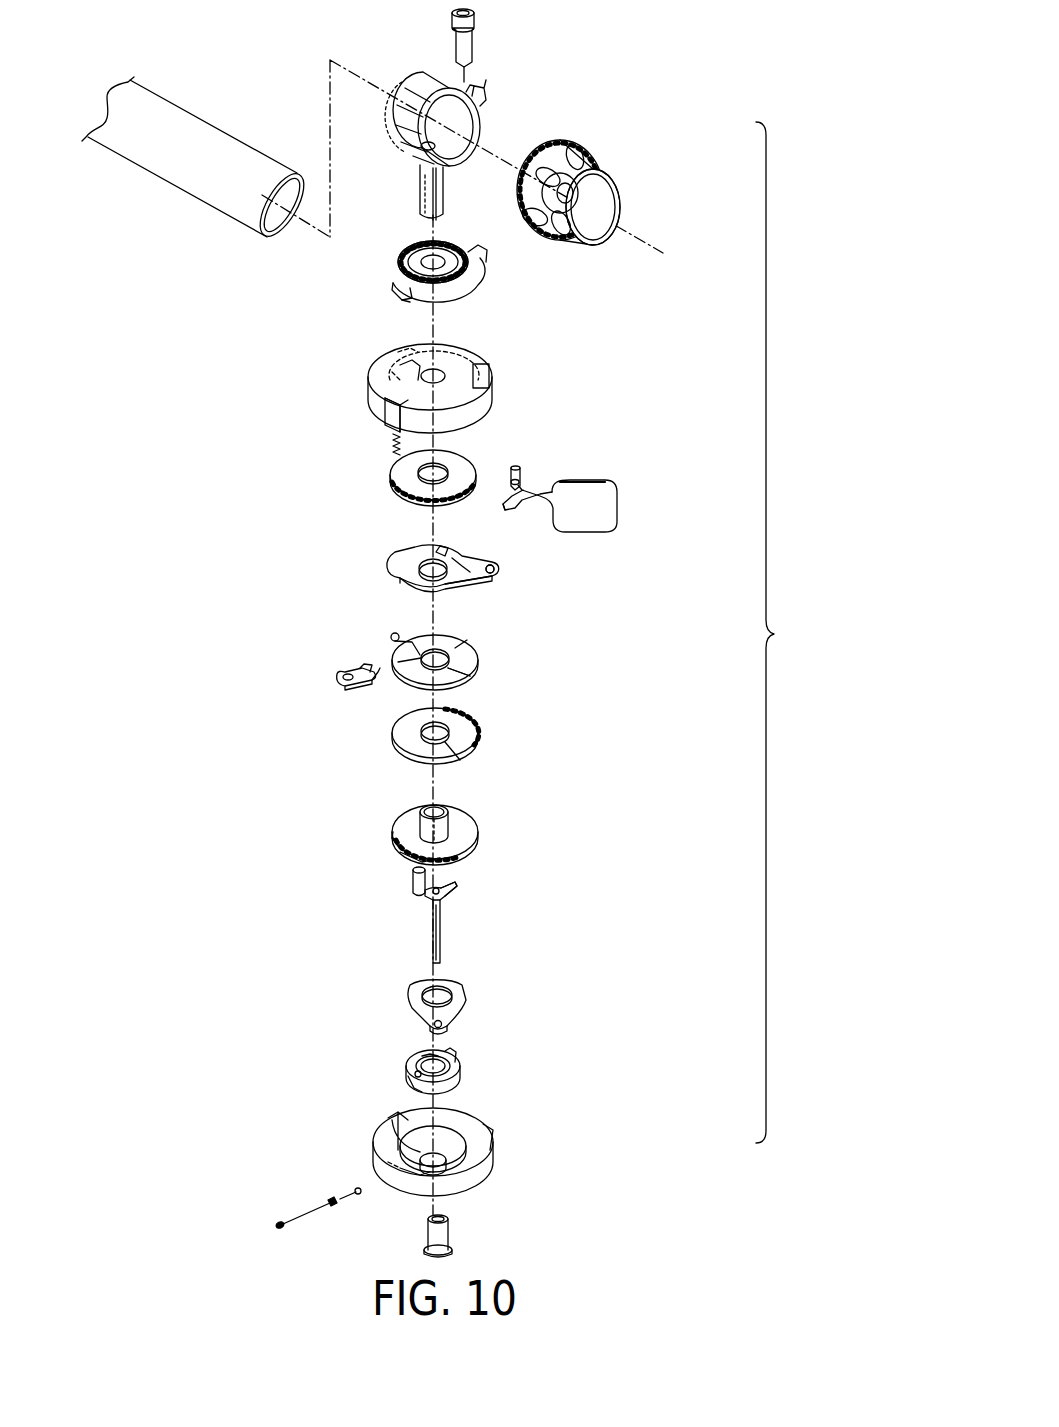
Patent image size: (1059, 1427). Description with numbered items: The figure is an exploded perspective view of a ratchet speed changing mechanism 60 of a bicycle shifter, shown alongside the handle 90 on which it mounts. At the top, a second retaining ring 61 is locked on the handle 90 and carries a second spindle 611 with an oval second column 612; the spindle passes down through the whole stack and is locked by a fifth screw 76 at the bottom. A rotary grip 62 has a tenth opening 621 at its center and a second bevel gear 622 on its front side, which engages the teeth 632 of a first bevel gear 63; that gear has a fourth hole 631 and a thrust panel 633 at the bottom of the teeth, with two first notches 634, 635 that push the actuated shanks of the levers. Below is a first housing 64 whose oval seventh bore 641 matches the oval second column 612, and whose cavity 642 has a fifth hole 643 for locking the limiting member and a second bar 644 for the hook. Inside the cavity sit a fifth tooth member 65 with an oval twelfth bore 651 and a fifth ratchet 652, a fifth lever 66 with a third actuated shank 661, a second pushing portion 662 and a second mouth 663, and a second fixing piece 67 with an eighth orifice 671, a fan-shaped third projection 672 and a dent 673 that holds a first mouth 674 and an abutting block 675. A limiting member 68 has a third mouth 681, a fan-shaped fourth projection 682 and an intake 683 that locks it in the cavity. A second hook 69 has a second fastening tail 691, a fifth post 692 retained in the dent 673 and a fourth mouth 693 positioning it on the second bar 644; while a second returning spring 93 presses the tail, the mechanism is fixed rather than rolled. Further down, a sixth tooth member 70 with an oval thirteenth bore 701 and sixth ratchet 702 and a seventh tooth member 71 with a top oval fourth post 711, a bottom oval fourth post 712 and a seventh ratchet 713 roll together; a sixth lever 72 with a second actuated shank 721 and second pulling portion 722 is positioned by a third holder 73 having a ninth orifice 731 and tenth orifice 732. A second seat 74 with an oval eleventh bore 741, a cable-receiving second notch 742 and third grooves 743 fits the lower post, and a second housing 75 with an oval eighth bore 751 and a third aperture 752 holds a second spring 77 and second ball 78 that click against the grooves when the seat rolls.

The ratchet speed changing mechanism 60 is at (779, 632).
The handle 90 is at (213, 128).
The second retaining ring 61 is at (430, 76).
The second spindle 611 is at (421, 176).
The oval second column 612 is at (424, 216).
The rotary grip 62 is at (606, 170).
The tenth opening 621 is at (621, 195).
The second bevel gear 622 is at (576, 144).
The first bevel gear 63 is at (450, 246).
The fourth hole 631 is at (479, 282).
The teeth 632 is at (405, 255).
The thrust panel 633 is at (397, 286).
The first notch 634 is at (488, 259).
The first notch 635 is at (408, 301).
The first housing 64 is at (483, 358).
The oval seventh bore 641 is at (446, 382).
The cavity 642 is at (450, 406).
The fifth hole 643 is at (380, 346).
The second bar 644 is at (380, 364).
The second returning spring 93 is at (394, 432).
The fifth tooth member 65 is at (400, 456).
The oval twelfth bore 651 is at (404, 472).
The fifth ratchet 652 is at (415, 496).
The fifth lever 66 is at (618, 506).
The third actuated shank 661 is at (522, 465).
The second pushing portion 662 is at (503, 511).
The second mouth 663 is at (560, 481).
The second fixing piece 67 is at (392, 563).
The eighth orifice 671 is at (466, 585).
The fan-shaped third projection 672 is at (460, 562).
The dent 673 is at (495, 569).
The first mouth 674 is at (466, 583).
The abutting block 675 is at (425, 550).
The limiting member 68 is at (479, 662).
The third mouth 681 is at (420, 658).
The fan-shaped fourth projection 682 is at (472, 678).
The intake 683 is at (394, 632).
The second hook 69 is at (336, 676).
The second fastening tail 691 is at (371, 686).
The fifth post 692 is at (358, 664).
The fourth mouth 693 is at (348, 686).
The sixth tooth member 70 is at (405, 753).
The oval thirteenth bore 701 is at (449, 742).
The sixth ratchet 702 is at (478, 730).
The seventh tooth member 71 is at (478, 840).
The oval fourth post 711 is at (470, 820).
The oval fourth post 712 is at (440, 858).
The seventh ratchet 713 is at (400, 852).
The sixth lever 72 is at (434, 926).
The second actuated shank 721 is at (412, 880).
The second pulling portion 722 is at (456, 892).
The third holder 73 is at (464, 990).
The ninth orifice 731 is at (410, 990).
The tenth orifice 732 is at (450, 1021).
The second seat 74 is at (462, 1068).
The oval eleventh bore 741 is at (420, 1058).
The second notch 742 is at (410, 1089).
The third grooves 743 is at (414, 1086).
The second housing 75 is at (492, 1130).
The oval eighth bore 751 is at (460, 1160).
The third aperture 752 is at (386, 1161).
The fifth screw 76 is at (452, 1240).
The second spring 77 is at (335, 1206).
The second ball 78 is at (360, 1194).